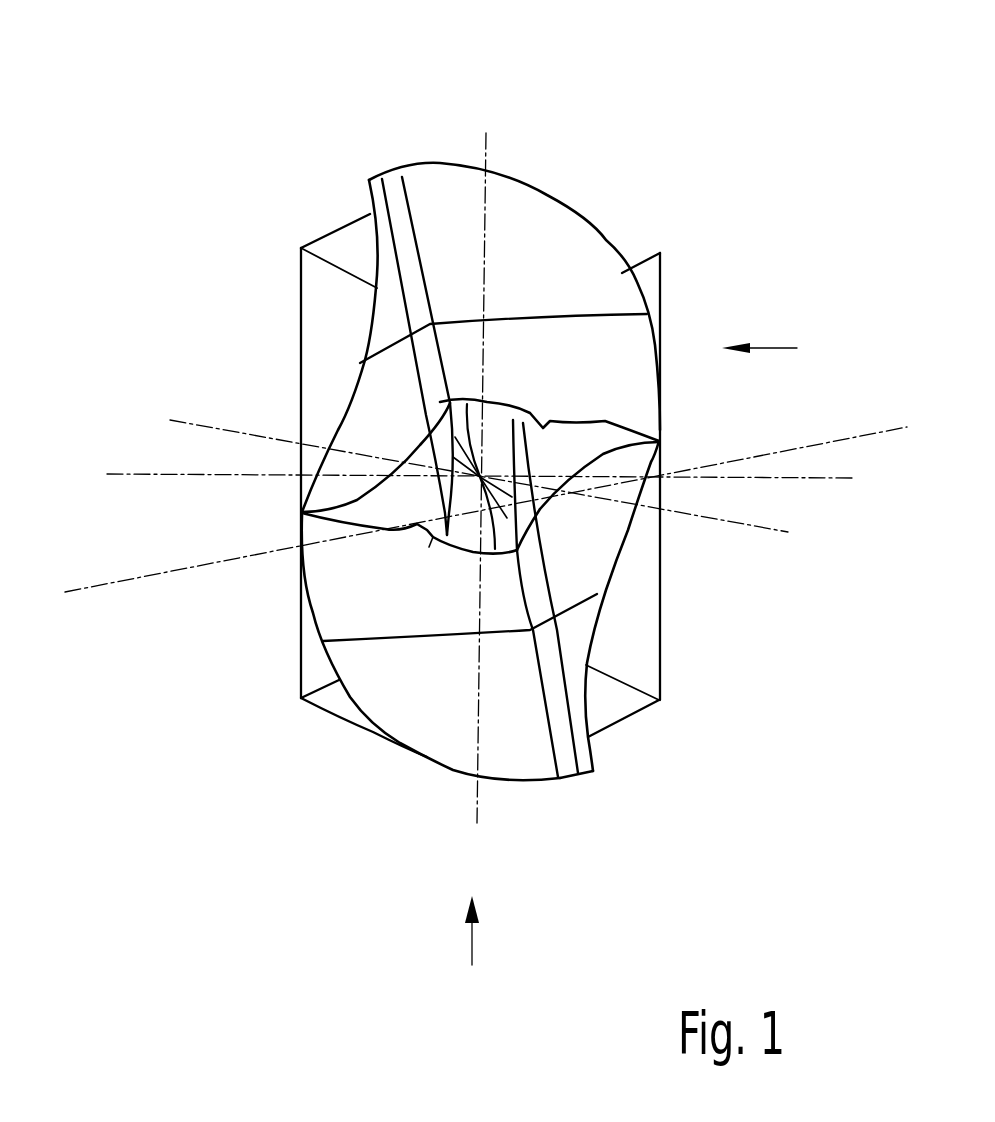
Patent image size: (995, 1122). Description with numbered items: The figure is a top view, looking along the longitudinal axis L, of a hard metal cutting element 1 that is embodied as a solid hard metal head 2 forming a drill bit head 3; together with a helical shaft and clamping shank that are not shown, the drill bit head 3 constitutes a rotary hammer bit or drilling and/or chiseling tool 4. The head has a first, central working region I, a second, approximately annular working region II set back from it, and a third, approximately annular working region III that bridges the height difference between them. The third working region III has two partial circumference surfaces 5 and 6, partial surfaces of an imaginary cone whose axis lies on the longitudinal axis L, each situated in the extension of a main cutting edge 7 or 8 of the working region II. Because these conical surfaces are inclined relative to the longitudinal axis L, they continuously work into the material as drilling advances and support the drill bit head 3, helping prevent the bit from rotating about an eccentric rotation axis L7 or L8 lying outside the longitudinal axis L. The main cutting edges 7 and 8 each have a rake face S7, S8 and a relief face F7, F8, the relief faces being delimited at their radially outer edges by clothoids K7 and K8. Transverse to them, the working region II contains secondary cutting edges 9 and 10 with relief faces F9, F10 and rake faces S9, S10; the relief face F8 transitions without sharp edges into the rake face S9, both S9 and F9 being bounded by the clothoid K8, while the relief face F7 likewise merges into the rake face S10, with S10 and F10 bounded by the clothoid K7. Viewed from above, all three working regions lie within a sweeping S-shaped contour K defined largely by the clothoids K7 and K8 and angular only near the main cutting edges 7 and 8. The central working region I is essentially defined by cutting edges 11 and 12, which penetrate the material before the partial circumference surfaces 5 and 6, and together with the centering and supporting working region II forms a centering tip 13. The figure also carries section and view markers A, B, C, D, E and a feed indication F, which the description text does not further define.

The drilling and/or chiseling tool 4 is at (310, 103).
The hard metal cutting element 1 is at (505, 330).
The solid hard metal head 2 is at (505, 306).
The drill bit head 3 is at (591, 303).
The partial circumference surface 5 is at (467, 540).
The partial circumference surface 6 is at (515, 397).
The main cutting edge 7 is at (535, 668).
The main cutting edge 8 is at (418, 220).
The secondary cutting edge 9 is at (580, 437).
The secondary cutting edge 10 is at (330, 523).
The cutting edge 11 is at (485, 545).
The cutting edge 12 is at (495, 403).
The centering tip 13 is at (557, 436).
The rotation axis L8 is at (402, 177).
The rake face S8 is at (392, 195).
The relief face F8 is at (452, 230).
The clothoid K8 is at (528, 190).
The rotation axis L7 is at (568, 760).
The rake face S7 is at (580, 778).
The relief face F7 is at (533, 757).
The clothoid K7 is at (453, 770).
The rake face S9 is at (627, 372).
The relief face F9 is at (627, 492).
The rake face S10 is at (347, 563).
The relief face F10 is at (367, 423).
The feed direction F is at (773, 348).
The S-shaped contour K is at (610, 572).
The longitudinal axis L is at (433, 540).
The first, central working region I is at (547, 417).
The second, approximately annular working region II is at (612, 154).
The third, approximately annular working region III is at (455, 545).
The section plane A- A is at (486, 133).
The section plane B- B is at (173, 378).
The section plane C- C is at (107, 520).
The section plane D- D is at (73, 633).
The view direction E is at (456, 930).